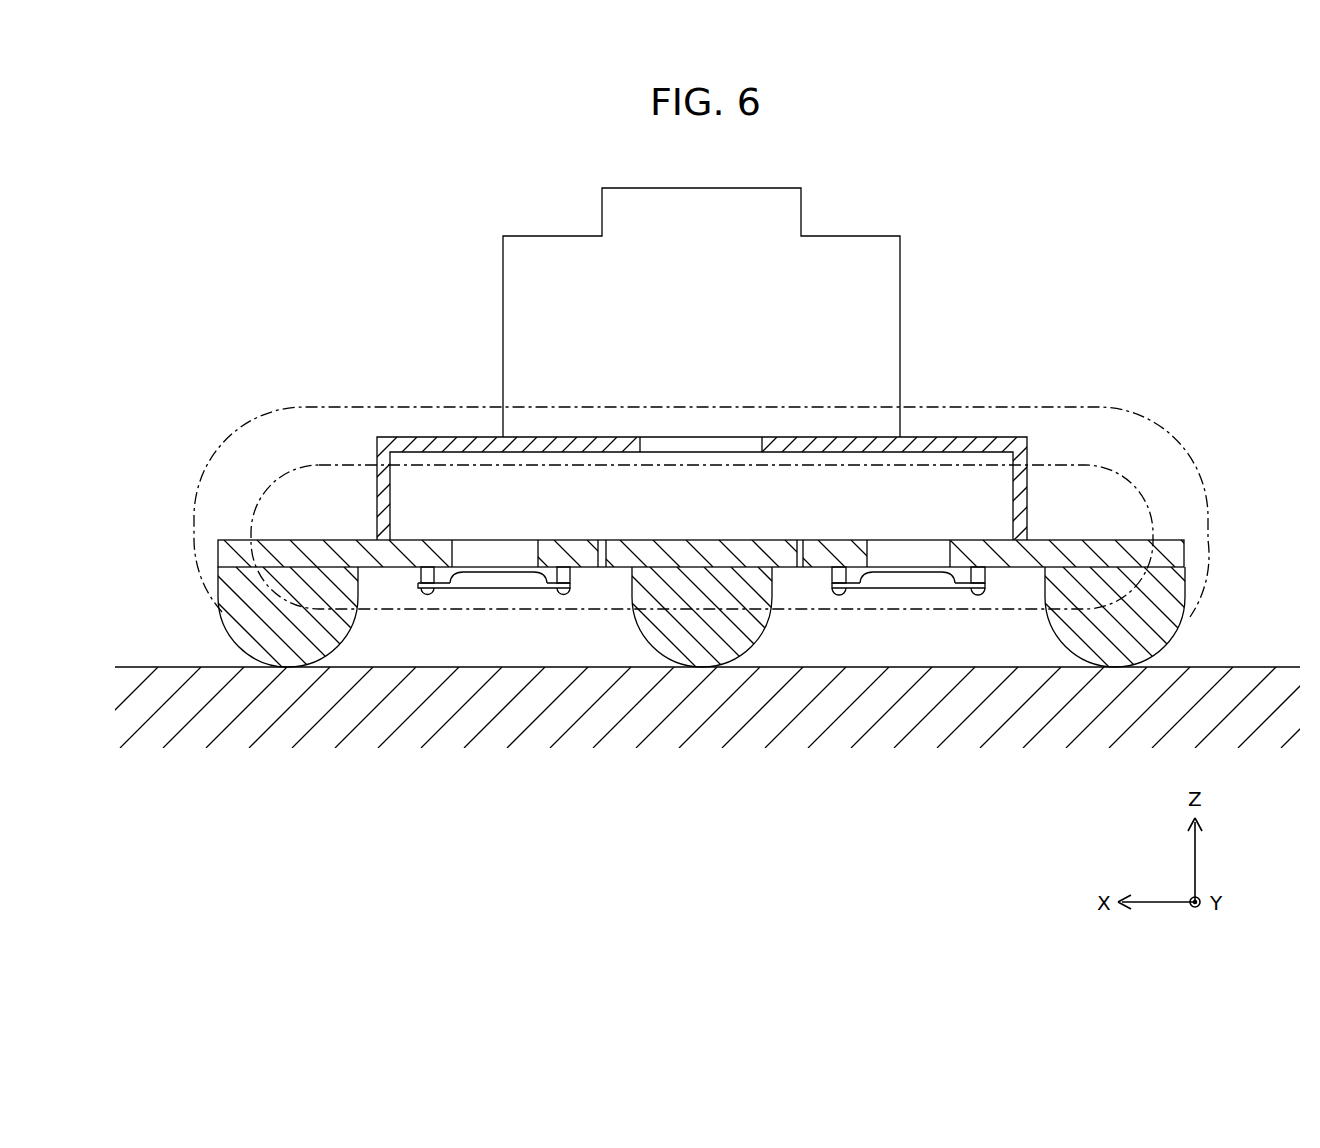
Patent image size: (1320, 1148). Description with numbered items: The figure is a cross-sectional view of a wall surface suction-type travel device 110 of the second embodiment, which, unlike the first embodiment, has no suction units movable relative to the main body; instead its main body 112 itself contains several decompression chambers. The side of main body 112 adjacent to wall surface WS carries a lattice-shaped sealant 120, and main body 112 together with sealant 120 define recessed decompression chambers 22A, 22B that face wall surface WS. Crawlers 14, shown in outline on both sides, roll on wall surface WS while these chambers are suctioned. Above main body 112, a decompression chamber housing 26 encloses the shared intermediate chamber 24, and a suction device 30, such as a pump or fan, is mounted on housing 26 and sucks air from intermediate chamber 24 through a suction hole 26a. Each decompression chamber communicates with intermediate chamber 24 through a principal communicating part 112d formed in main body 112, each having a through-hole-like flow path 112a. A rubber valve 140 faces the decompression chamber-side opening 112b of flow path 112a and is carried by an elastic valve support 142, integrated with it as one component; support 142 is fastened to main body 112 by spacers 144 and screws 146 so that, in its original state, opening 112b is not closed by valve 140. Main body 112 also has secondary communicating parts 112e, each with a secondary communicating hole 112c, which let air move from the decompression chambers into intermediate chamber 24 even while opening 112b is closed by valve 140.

The wall surface suction-type travel device 110 is at (348, 266).
The suction device 30 is at (714, 341).
The decompression chamber housing 26 is at (1022, 438).
The suction hole 26a is at (707, 443).
The intermediate chamber 24 is at (754, 529).
The crawlers 14 is at (1068, 407).
The main body 112 is at (1112, 540).
The flow path 112a is at (478, 547).
The decompression chamber-side opening 112b is at (480, 580).
The secondary communicating hole 112c is at (603, 540).
The principal communicating part 112d is at (439, 540).
The secondary communicating part 112e is at (592, 538).
The valve 140 is at (496, 573).
The valve support 142 is at (547, 588).
The spacers 144 is at (420, 578).
The screws 146 is at (424, 594).
The lattice-shaped sealant 120 is at (721, 646).
The decompression chamber 22A is at (386, 662).
The decompression chamber 22B is at (1038, 662).
The wall surface WS is at (160, 666).